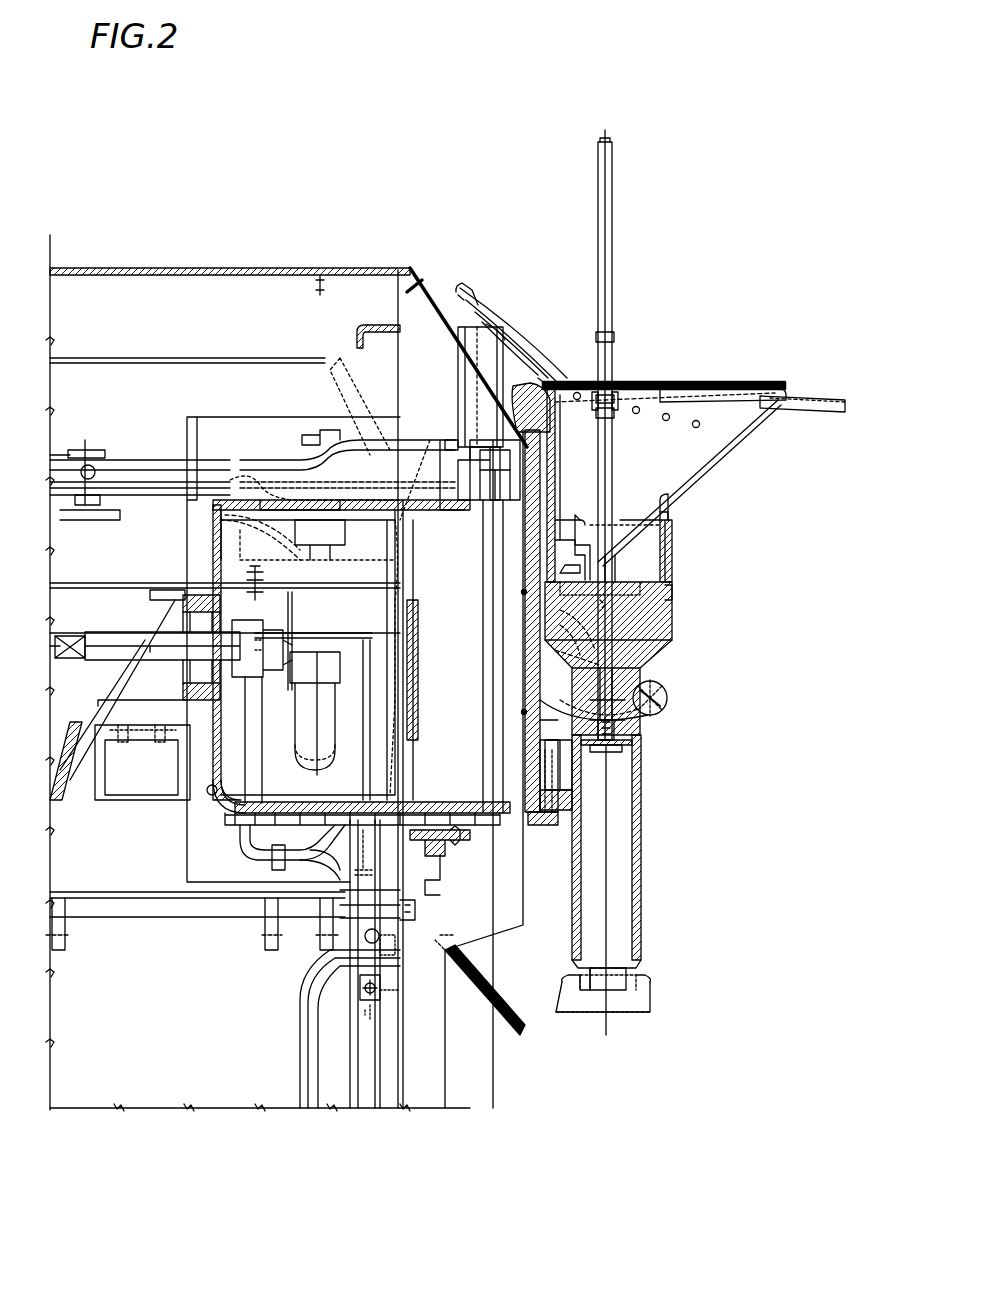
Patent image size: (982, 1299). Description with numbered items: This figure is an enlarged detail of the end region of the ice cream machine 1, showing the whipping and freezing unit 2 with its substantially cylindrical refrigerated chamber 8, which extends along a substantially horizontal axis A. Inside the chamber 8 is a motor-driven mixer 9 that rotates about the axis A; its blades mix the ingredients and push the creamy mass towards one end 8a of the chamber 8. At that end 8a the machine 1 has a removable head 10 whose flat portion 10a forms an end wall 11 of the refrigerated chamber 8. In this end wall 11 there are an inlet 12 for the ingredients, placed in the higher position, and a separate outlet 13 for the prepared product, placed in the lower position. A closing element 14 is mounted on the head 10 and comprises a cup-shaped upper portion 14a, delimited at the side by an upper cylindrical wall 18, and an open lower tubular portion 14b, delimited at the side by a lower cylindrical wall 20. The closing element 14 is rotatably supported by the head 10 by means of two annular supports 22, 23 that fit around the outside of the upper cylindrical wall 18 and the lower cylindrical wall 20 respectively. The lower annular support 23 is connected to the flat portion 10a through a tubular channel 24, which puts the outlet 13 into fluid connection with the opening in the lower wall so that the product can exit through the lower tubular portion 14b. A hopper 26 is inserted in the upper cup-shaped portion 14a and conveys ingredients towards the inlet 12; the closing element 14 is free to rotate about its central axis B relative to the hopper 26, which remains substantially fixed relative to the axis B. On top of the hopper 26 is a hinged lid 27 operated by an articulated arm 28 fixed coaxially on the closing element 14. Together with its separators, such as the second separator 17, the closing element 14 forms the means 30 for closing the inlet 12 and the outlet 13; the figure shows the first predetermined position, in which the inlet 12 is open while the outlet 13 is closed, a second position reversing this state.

The machine 1 is at (350, 232).
The whipping and freezing unit 2 is at (190, 550).
The refrigerated chamber 8 is at (282, 548).
The end of the chamber 8a is at (473, 720).
The motor-driven mixer 9 is at (168, 656).
The removable head 10 is at (684, 684).
The flat portion 10a is at (530, 680).
The end wall 11 is at (524, 712).
The inlet 12 is at (440, 436).
The outlet 13 is at (538, 780).
The closing element 14 is at (652, 646).
The cup-shaped upper portion 14a is at (648, 548).
The open lower tubular portion 14b is at (650, 815).
The second separator 17 is at (562, 790).
The upper cylindrical wall 18 is at (672, 516).
The lower cylindrical wall 20 is at (628, 800).
The upper annular support 22 is at (678, 586).
The lower annular support 23 is at (650, 752).
The tubular channel 24 is at (552, 760).
The hopper 26 is at (765, 437).
The lid 27 is at (700, 380).
The articulated arm 28 is at (825, 396).
The means for closing the inlet and the outlet 30 is at (676, 632).
The horizontal axis of extension A is at (150, 612).
The central axis B is at (615, 885).